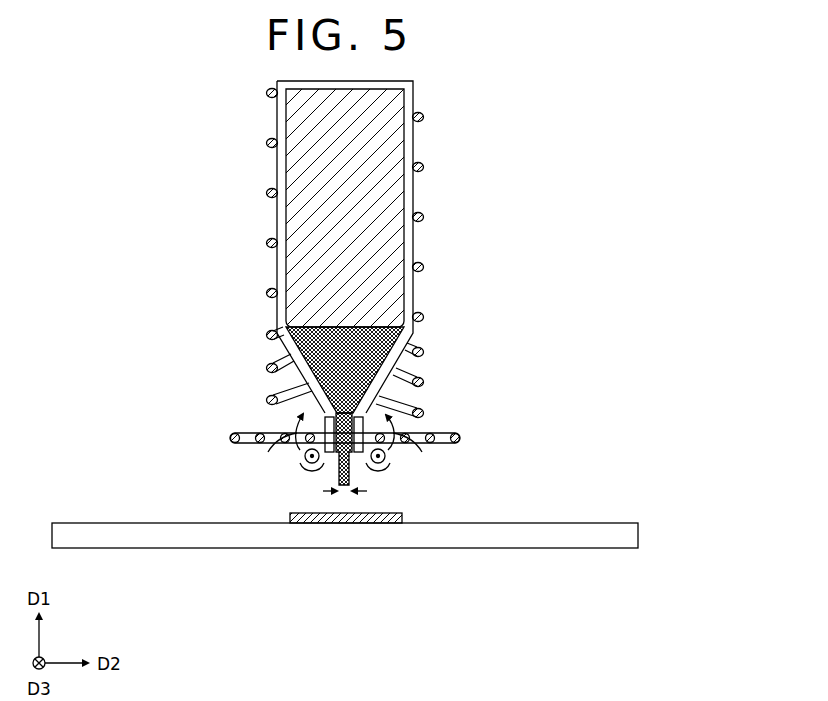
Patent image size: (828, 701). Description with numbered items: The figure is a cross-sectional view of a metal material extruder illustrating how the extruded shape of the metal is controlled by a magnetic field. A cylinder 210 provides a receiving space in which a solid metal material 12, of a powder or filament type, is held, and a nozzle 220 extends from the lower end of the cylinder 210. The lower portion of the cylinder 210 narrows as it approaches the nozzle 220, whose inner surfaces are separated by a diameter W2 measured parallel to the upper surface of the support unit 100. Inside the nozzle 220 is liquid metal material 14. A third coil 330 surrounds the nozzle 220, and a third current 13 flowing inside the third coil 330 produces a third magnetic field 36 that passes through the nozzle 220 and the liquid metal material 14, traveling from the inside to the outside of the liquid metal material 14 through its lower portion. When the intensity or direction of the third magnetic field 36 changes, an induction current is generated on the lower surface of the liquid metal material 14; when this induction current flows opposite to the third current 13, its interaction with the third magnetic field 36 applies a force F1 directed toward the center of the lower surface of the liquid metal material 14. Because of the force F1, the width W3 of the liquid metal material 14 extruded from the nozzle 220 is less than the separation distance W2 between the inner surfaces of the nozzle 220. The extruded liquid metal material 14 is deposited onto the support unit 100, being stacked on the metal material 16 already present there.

The cylinder 210 is at (283, 173).
The solid metal material 12 is at (300, 223).
The liquid metal material 14 is at (322, 312).
The nozzle 220 is at (356, 462).
The third coil 330 is at (392, 404).
The third magnetic field 36 is at (284, 411).
The third current 13 is at (292, 452).
The support unit 100 is at (638, 535).
The metal material 16 is at (305, 523).
The diameter of the inner surface of the nozzle W2 is at (302, 385).
The width of the extruded liquid metal material W3 is at (323, 491).
The force F1 is at (318, 462).